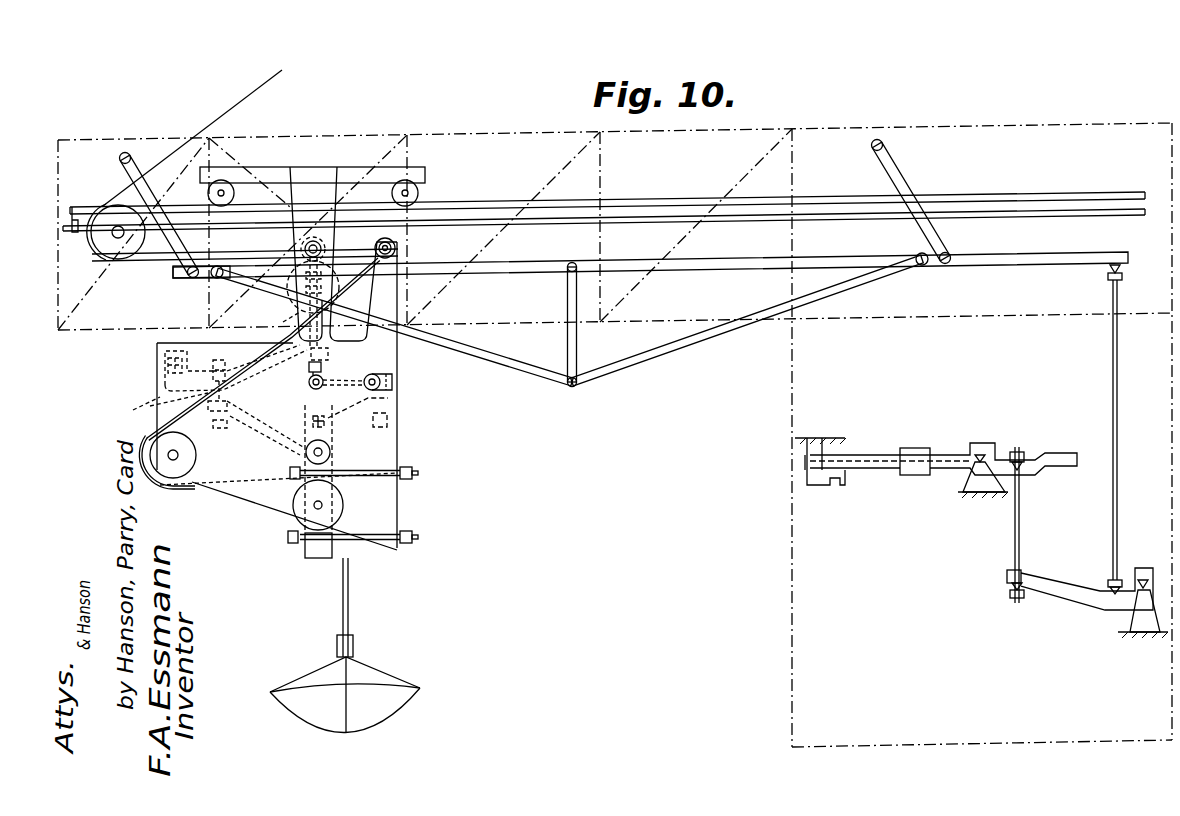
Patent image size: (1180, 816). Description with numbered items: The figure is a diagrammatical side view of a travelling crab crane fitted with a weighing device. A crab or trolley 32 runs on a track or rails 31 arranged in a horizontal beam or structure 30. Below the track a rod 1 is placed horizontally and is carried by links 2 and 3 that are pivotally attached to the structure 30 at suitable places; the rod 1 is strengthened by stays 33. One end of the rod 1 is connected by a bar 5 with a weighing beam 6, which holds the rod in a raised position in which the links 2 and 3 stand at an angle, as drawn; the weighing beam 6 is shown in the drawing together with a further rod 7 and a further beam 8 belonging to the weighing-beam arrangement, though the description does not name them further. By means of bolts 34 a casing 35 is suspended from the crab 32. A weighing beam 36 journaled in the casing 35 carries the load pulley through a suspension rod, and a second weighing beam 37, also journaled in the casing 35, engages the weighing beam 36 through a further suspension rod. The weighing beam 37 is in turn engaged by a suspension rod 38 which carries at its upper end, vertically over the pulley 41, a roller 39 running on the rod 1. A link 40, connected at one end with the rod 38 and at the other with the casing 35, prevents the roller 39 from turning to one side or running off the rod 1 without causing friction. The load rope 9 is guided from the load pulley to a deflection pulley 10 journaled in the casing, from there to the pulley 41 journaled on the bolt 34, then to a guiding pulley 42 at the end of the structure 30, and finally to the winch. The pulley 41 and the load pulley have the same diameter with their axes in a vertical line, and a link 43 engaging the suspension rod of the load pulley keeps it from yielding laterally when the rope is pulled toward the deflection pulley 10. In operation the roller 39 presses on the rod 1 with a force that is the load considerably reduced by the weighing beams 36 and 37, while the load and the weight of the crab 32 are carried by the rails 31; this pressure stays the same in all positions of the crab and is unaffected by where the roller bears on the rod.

The rod 1 is at (509, 263).
The link 2 is at (147, 193).
The link 3 is at (900, 180).
The bar 5 is at (1113, 365).
The weighing beam 6 is at (1097, 598).
The rod 7 is at (1018, 527).
The lever 8 is at (942, 460).
The load rope 9 is at (345, 598).
The deflection pulley 10 is at (165, 482).
The horizontal beam or structure 30 is at (730, 128).
The rails 31 is at (248, 220).
The crab or trolley 32 is at (352, 168).
The stays 33 is at (503, 362).
The bolts 34 is at (272, 288).
The casing 35 is at (253, 493).
The weighing beam 36 is at (342, 430).
The second weighing beam 37 is at (273, 368).
The suspension rod 38 is at (281, 321).
The roller 39 is at (328, 237).
The link 40 is at (353, 248).
The pulley 41 is at (333, 284).
The guiding pulley 42 is at (110, 247).
The link 43 is at (360, 472).